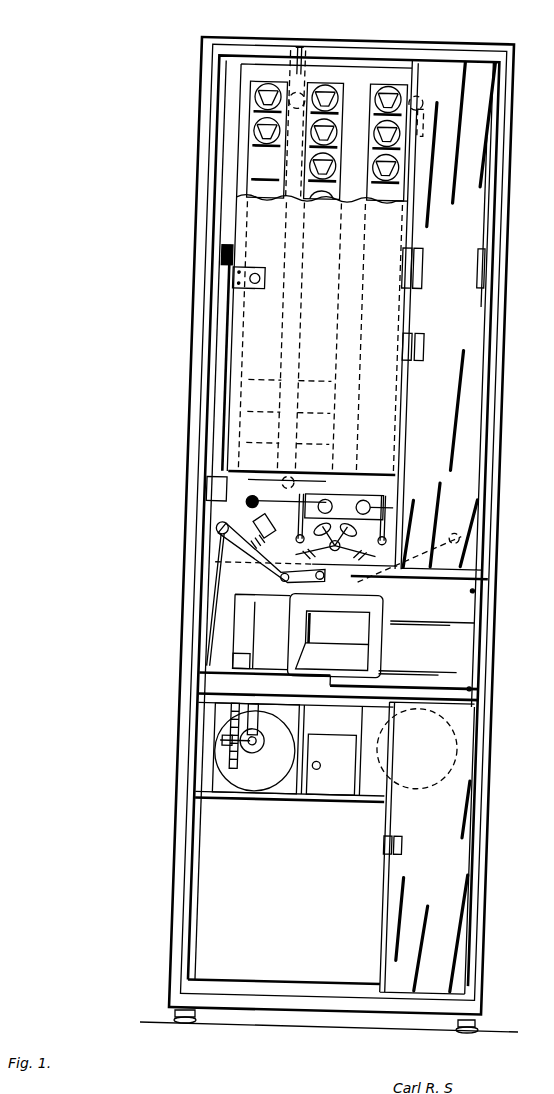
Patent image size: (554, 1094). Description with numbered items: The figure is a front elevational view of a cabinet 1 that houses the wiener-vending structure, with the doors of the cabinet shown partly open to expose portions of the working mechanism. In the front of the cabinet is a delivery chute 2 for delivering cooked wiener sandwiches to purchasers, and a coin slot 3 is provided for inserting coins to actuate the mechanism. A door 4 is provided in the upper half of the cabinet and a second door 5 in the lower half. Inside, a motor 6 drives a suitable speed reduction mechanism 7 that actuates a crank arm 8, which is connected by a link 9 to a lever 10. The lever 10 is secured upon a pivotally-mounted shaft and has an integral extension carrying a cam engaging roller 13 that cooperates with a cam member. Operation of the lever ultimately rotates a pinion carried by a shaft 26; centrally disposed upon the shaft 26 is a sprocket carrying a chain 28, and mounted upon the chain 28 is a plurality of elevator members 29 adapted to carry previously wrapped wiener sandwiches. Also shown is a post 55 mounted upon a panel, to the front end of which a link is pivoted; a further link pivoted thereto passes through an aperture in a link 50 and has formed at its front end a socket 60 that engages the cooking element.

The cabinet 1 is at (290, 27).
The delivery chute 2 is at (320, 640).
The coin slot 3 is at (234, 309).
The door 4 is at (456, 64).
The second door 5 is at (424, 878).
The motor 6 is at (287, 793).
The speed reduction mechanism 7 is at (255, 757).
The crank arm 8 is at (246, 661).
The link 9 is at (233, 579).
The lever 10 is at (270, 554).
The cam engaging roller 13 is at (309, 574).
The shaft 26 is at (286, 496).
The chain 28 is at (290, 243).
The elevator members 29 is at (336, 440).
The link 50 is at (310, 183).
The post 55 is at (287, 472).
The socket 60 is at (344, 520).